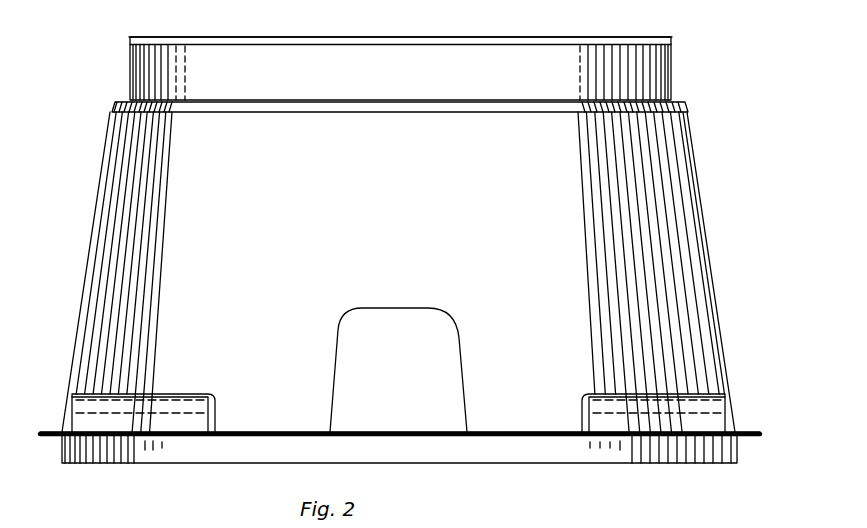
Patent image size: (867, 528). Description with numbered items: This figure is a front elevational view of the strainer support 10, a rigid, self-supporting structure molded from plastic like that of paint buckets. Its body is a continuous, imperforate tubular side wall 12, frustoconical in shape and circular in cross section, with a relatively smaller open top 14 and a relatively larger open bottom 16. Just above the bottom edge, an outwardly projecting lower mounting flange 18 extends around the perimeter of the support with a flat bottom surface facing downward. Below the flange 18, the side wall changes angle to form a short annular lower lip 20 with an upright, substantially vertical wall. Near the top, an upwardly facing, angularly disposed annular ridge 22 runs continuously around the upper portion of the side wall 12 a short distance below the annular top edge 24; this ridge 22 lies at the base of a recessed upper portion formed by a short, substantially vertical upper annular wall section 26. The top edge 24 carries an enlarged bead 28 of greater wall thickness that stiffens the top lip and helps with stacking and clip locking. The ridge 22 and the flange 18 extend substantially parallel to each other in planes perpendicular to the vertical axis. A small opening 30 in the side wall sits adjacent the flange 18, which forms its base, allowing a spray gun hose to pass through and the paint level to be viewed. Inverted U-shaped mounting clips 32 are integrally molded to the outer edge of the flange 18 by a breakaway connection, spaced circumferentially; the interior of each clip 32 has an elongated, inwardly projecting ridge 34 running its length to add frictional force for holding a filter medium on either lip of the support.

The strainer support 10 is at (92, 207).
The tubular side wall 12 is at (700, 248).
The open top 14 is at (547, 41).
The open bottom 16 is at (268, 462).
The lower mounting flange 18 is at (410, 432).
The lower lip 20 is at (740, 457).
The annular ridge 22 is at (530, 112).
The top edge 24 is at (262, 37).
The upper annular wall section 26 is at (674, 70).
The enlarged bead 28 is at (130, 42).
The opening 30 is at (337, 383).
The mounting clip 32 is at (157, 405).
The inwardly projecting ridge 34 is at (112, 441).